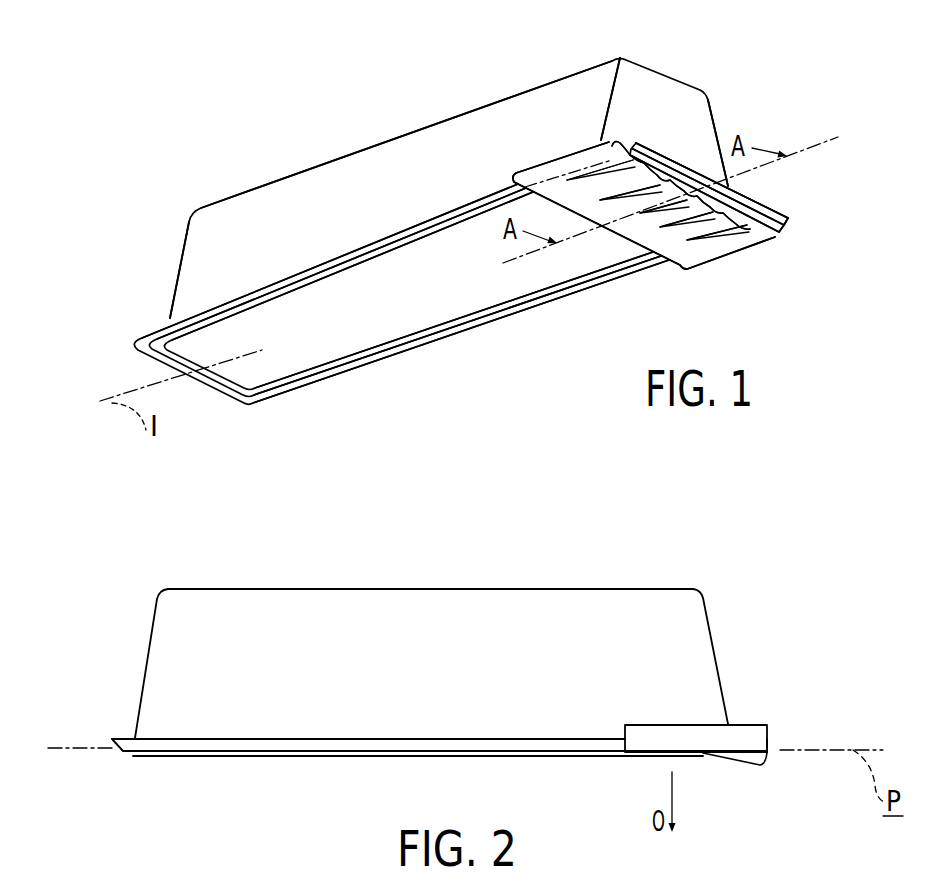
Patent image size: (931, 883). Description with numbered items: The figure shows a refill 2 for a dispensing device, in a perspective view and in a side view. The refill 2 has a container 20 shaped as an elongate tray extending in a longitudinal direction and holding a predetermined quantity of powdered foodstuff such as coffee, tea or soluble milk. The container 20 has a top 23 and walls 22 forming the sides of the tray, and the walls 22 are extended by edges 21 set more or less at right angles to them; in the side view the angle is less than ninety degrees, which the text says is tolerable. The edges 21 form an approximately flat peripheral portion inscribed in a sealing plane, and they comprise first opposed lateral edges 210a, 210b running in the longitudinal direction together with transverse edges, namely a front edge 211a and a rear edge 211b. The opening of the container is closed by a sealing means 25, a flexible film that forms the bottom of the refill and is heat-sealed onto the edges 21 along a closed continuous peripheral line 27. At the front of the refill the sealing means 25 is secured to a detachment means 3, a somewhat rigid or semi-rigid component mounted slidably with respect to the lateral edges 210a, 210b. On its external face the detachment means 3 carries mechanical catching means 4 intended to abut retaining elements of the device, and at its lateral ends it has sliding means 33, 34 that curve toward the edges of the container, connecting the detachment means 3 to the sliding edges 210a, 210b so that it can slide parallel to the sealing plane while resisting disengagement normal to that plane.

In FIG. 1, the refill 2 is at (388, 104).
In FIG. 1, the container 20 is at (255, 214).
In FIG. 1, the edges 21 is at (481, 197).
In FIG. 2, the edges 21 is at (385, 742).
In FIG. 1, the walls 22 is at (600, 88).
In FIG. 2, the walls 22 is at (690, 640).
In FIG. 2, the top 23 is at (500, 589).
In FIG. 1, the sealing means 25 is at (507, 292).
In FIG. 2, the sealing means 25 is at (217, 756).
In FIG. 1, the closed continuous peripheral line 27 is at (580, 288).
In FIG. 1, the first lateral edge 210a is at (423, 353).
In FIG. 1, the first lateral edge 210b is at (410, 226).
In FIG. 1, the front edge 211a is at (781, 204).
In FIG. 2, the front edge 211a is at (767, 748).
In FIG. 2, the rear edge 211b is at (112, 740).
In FIG. 1, the detachment means 3 is at (724, 273).
In FIG. 2, the detachment means 3 is at (704, 767).
In FIG. 1, the sliding means 33 is at (780, 233).
In FIG. 1, the sliding means 34 is at (583, 148).
In FIG. 1, the mechanical catching means 4 is at (736, 242).
In FIG. 2, the mechanical catching means 4 is at (764, 772).